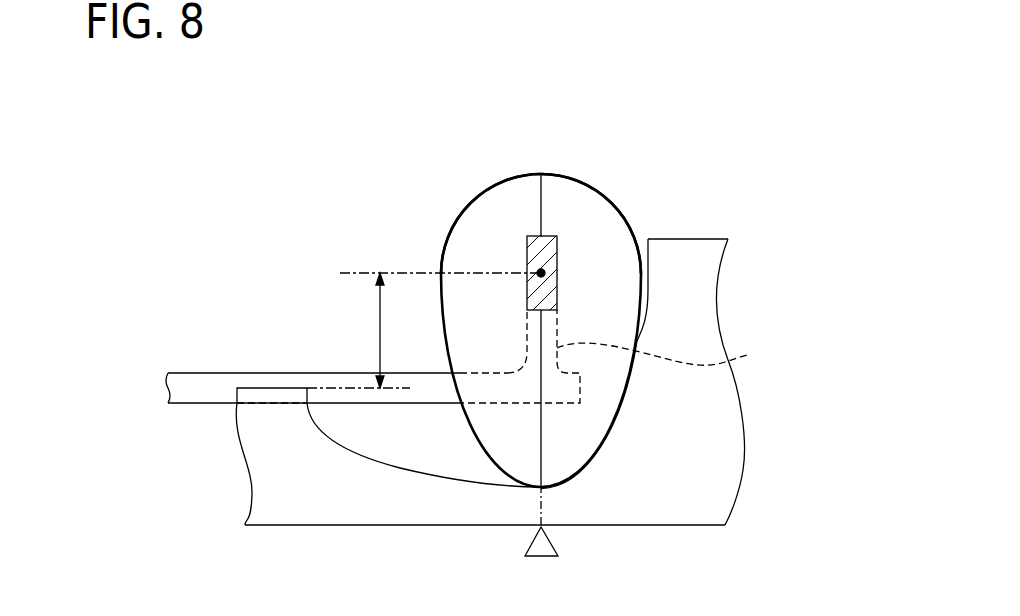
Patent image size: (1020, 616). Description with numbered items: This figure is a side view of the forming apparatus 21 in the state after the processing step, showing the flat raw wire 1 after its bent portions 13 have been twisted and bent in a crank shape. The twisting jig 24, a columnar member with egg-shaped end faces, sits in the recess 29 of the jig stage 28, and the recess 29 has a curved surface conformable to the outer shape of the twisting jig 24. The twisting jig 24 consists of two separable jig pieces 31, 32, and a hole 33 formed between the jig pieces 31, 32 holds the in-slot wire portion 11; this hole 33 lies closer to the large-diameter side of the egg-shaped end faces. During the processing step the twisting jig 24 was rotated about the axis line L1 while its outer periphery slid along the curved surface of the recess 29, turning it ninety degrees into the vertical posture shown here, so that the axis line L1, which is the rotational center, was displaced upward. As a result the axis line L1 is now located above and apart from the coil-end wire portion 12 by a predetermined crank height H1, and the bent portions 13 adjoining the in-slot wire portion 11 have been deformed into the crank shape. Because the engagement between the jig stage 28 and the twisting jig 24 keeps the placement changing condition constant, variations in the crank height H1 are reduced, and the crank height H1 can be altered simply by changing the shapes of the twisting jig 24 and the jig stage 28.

The flat raw wire 1 is at (243, 372).
The coil-end wire portion 12 is at (320, 372).
The recess 29 is at (443, 473).
The twisting jig 24 is at (458, 225).
The jig piece 31 is at (487, 188).
The jig piece 32 is at (565, 183).
The forming apparatus 21 is at (627, 137).
The in-slot wire portion 11 is at (527, 237).
The hole 33 is at (548, 243).
The axis line L1 is at (545, 273).
The crank height H1 is at (364, 330).
The jig stage 28 is at (685, 238).
The bent portion 13 is at (667, 354).